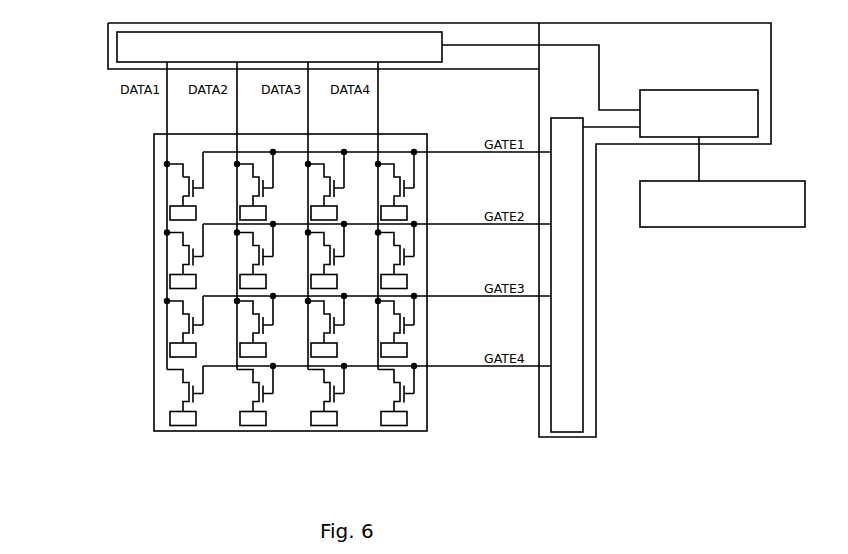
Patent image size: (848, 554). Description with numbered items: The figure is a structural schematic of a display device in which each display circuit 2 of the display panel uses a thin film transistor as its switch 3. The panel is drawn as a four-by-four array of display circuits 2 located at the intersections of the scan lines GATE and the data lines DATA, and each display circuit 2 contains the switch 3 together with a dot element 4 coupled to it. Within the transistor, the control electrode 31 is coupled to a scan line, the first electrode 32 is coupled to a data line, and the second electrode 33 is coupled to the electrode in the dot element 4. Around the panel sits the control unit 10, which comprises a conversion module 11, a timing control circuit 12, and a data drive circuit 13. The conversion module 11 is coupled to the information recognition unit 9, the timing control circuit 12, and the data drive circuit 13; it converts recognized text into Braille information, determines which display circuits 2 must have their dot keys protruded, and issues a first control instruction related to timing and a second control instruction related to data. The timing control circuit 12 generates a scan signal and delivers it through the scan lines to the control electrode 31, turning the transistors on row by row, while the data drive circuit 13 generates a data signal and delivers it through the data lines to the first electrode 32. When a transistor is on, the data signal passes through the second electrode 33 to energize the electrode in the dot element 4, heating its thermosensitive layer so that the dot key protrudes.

The display circuit 2 is at (221, 180).
The switch 3 is at (153, 179).
The dot element 4 is at (171, 214).
The information recognition unit 9 is at (660, 181).
The control unit 10 is at (108, 49).
The conversion module 11 is at (666, 90).
The timing control circuit 12 is at (550, 128).
The data drive circuit 13 is at (307, 32).
The control electrode 31 is at (195, 185).
The first electrode 32 is at (165, 165).
The second electrode 33 is at (183, 202).